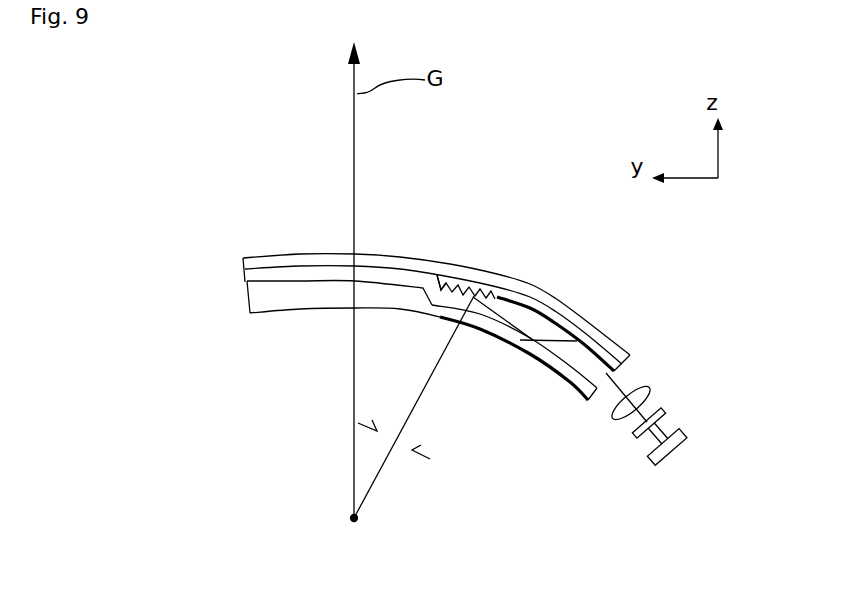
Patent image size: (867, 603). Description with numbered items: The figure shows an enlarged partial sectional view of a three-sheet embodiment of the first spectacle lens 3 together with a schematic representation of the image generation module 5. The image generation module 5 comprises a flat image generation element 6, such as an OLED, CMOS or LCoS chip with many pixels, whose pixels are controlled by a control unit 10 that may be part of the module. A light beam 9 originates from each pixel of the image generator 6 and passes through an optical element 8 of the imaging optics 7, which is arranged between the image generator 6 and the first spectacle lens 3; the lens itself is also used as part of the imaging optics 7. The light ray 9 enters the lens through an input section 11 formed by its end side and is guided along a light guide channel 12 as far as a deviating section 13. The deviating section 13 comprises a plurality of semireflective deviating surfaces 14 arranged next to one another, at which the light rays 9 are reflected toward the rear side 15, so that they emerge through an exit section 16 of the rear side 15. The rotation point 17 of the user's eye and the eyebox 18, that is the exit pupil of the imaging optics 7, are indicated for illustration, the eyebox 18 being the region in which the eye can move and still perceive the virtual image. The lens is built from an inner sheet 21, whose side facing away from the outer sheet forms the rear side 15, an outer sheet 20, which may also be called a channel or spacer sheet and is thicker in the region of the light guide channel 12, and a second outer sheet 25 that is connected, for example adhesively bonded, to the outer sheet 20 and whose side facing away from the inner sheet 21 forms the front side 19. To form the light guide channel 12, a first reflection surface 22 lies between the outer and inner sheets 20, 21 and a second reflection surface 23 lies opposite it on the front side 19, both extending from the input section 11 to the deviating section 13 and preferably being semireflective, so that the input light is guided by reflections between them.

The first spectacle lens 3 is at (230, 286).
The image generation module 5 is at (678, 407).
The image generation element 6 is at (672, 420).
The imaging optics 7 is at (662, 381).
The optical element 8 is at (618, 422).
The light beam 9 is at (621, 386).
The control unit 10 is at (666, 462).
The input section 11 is at (603, 380).
The light guide channel 12 is at (538, 345).
The deviating section 13 is at (473, 266).
The semireflective deviating surfaces 14 is at (438, 284).
The rear side 15 is at (277, 314).
The exit section 16 is at (472, 298).
The rotation point 17 is at (354, 518).
The eyebox 18 is at (368, 428).
The front side 19 is at (267, 252).
The outer sheet 20 is at (272, 278).
The inner sheet 21 is at (333, 298).
The first reflection surface 22 is at (560, 377).
The second reflection surface 23 is at (577, 337).
The second outer sheet 25 is at (312, 260).